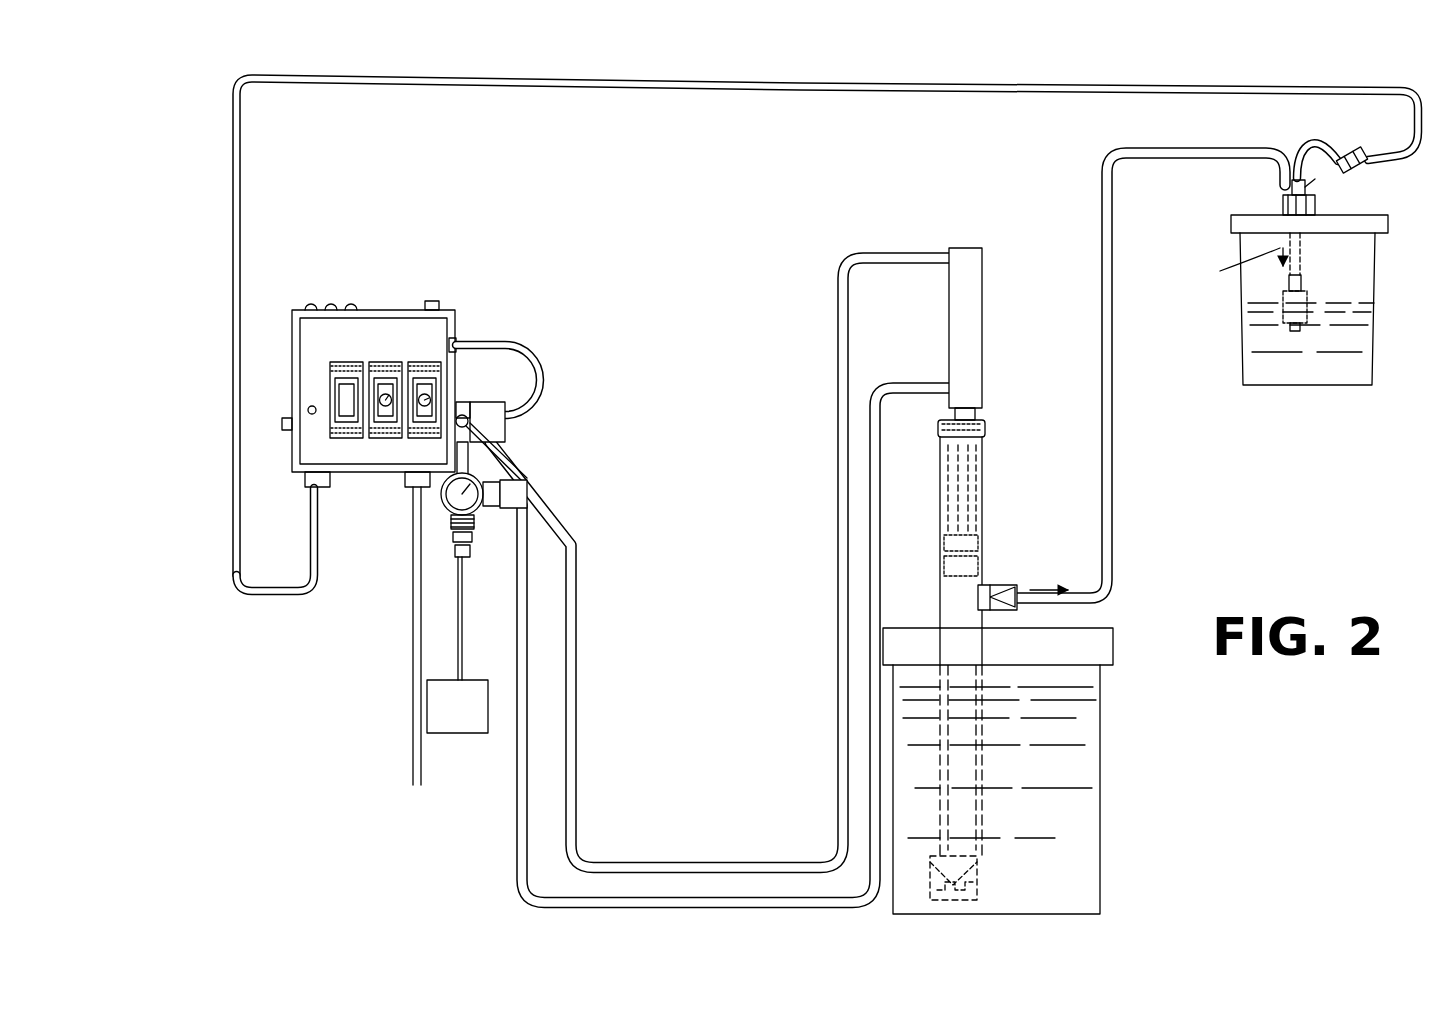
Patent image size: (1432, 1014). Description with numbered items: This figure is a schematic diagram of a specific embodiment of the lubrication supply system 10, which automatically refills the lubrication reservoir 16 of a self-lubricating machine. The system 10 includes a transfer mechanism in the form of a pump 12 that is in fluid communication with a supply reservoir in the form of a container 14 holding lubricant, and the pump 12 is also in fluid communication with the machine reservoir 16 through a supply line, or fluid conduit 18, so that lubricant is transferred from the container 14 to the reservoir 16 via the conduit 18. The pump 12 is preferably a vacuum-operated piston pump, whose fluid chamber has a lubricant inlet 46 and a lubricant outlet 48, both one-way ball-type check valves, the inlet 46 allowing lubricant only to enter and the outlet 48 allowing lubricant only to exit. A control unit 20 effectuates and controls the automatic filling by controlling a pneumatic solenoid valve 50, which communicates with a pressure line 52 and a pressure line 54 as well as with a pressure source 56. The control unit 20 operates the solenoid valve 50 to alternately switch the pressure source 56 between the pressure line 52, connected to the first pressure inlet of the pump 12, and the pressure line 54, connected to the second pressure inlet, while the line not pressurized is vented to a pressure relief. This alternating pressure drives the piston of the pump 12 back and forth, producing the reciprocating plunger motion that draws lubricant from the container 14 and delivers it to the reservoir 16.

The lubrication supply system 10 is at (798, 76).
The pump 12 is at (1003, 356).
The container 14 is at (1100, 762).
The reservoir 16 is at (1238, 303).
The fluid conduit 18 is at (1100, 207).
The control unit 20 is at (392, 300).
The lubricant inlet 46 is at (995, 585).
The lubricant outlet 48 is at (978, 880).
The pneumatic solenoid valve 50 is at (507, 432).
The pressure line 52 is at (514, 820).
The pressure line 54 is at (584, 592).
The pressure source 56 is at (474, 680).